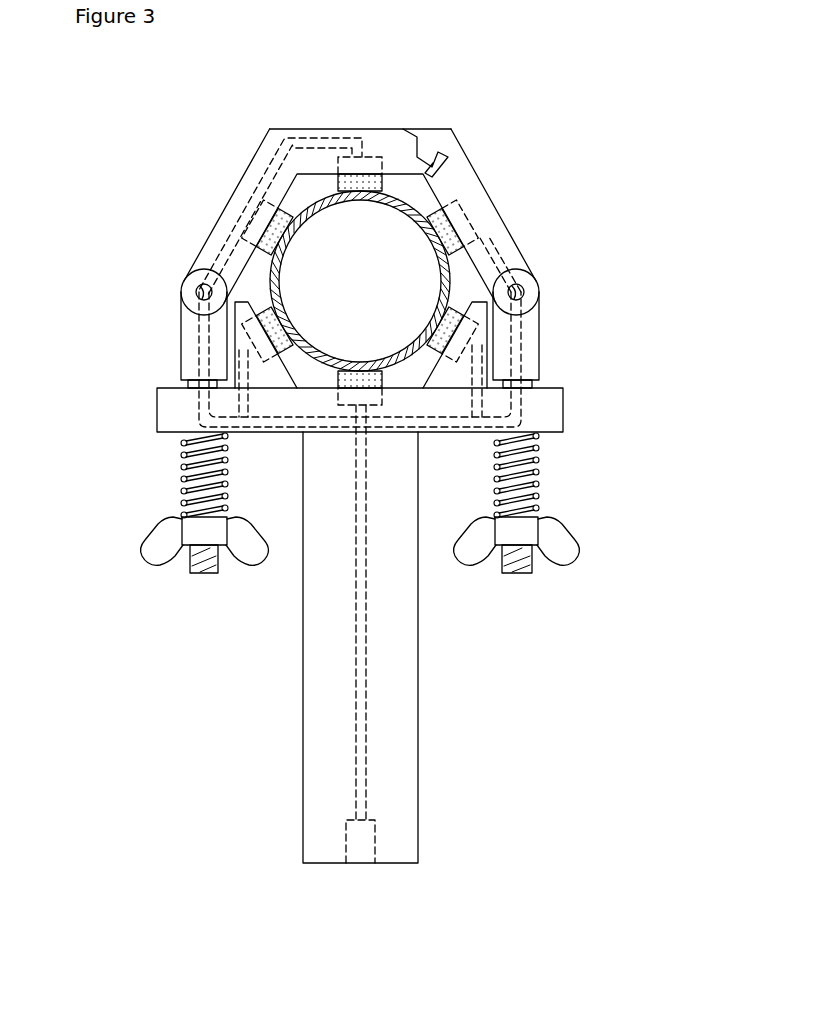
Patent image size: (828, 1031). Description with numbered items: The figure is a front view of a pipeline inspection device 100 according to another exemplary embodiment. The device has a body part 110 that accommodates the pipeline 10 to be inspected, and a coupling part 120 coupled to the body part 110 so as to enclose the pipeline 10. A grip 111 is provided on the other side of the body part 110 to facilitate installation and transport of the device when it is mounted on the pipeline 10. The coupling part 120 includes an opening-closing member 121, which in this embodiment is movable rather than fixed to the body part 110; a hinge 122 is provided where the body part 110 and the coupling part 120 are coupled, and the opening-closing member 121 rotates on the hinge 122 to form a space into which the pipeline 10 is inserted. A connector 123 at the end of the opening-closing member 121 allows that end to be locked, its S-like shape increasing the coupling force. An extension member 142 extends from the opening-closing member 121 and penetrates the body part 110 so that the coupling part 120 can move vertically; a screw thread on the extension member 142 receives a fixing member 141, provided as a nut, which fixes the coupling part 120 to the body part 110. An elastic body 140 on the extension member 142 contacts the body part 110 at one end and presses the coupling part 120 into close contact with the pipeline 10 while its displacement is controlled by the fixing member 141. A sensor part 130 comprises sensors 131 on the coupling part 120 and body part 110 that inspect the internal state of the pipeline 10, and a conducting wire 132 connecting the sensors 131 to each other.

The pipeline 10 is at (320, 203).
The pipeline inspection device 100 is at (580, 365).
The body part 110 is at (556, 411).
The grip 111 is at (409, 672).
The coupling part 120 is at (222, 214).
The opening-closing member 121 is at (213, 252).
The hinge 122 is at (197, 293).
The connector 123 is at (413, 131).
The sensor part 130 is at (466, 287).
The sensor 131 is at (458, 211).
The conducting wire 132 is at (497, 247).
The elastic body 140 is at (537, 477).
The fixing member 141 is at (568, 553).
The extension member 142 is at (513, 567).